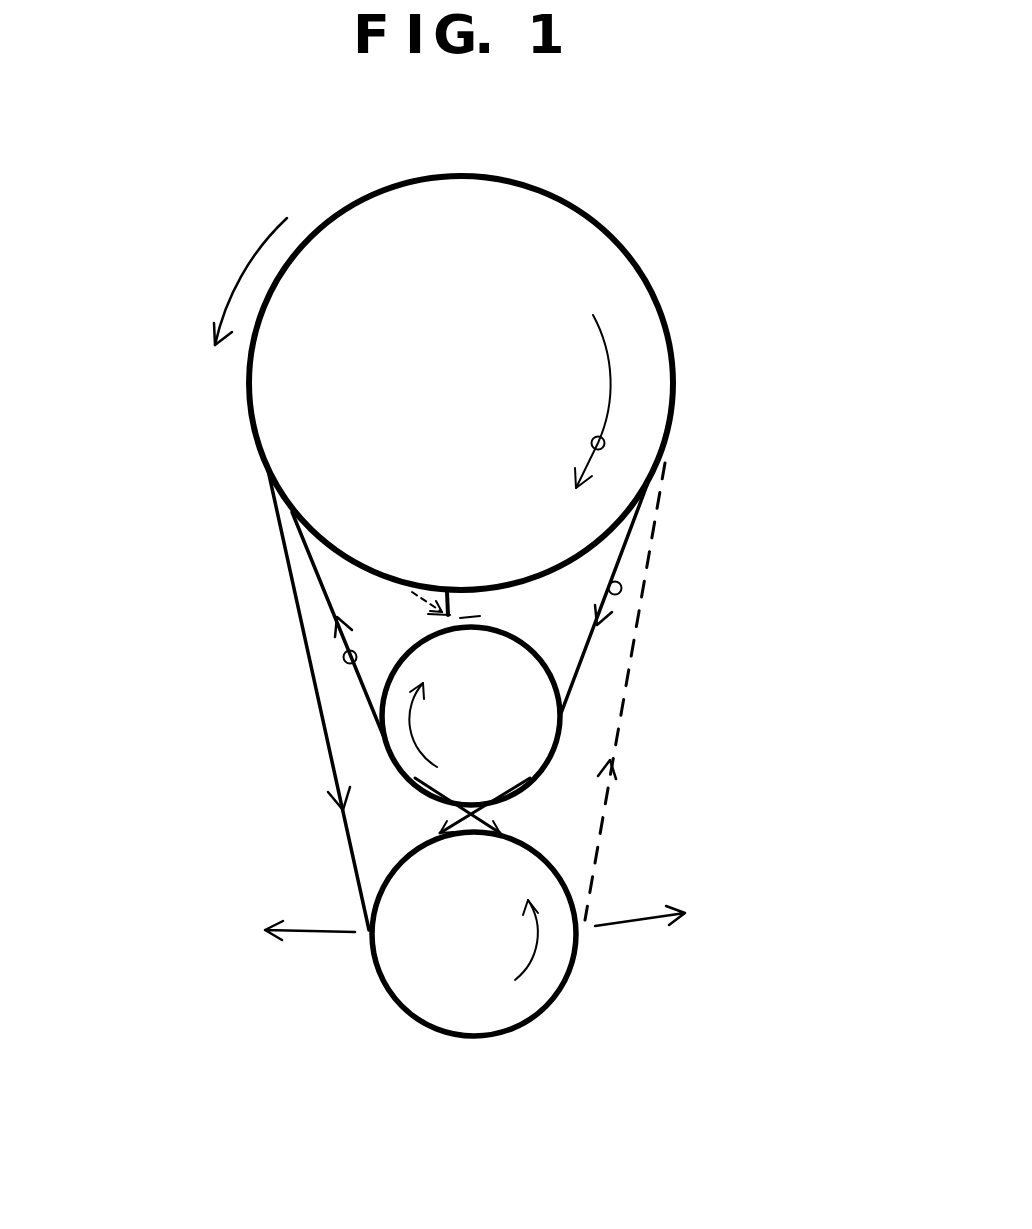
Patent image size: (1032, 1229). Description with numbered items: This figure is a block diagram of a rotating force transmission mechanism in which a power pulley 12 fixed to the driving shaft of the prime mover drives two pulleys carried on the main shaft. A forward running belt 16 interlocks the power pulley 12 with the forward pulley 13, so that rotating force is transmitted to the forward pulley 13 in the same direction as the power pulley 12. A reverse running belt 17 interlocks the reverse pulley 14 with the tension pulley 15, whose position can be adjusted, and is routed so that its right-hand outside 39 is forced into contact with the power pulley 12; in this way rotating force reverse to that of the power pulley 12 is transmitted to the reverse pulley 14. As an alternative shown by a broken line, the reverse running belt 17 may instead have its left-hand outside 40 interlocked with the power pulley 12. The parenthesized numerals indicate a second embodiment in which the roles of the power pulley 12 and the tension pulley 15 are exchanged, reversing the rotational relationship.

The power pulley 12 is at (510, 698).
The forward pulley 13 is at (633, 355).
The reverse pulley 14 is at (242, 410).
The tension pulley 15 is at (500, 870).
The forward running belt 16 is at (632, 552).
The reverse running belt 17 is at (300, 632).
The right-hand outside 39 is at (465, 620).
The left-hand outside 40 is at (505, 597).